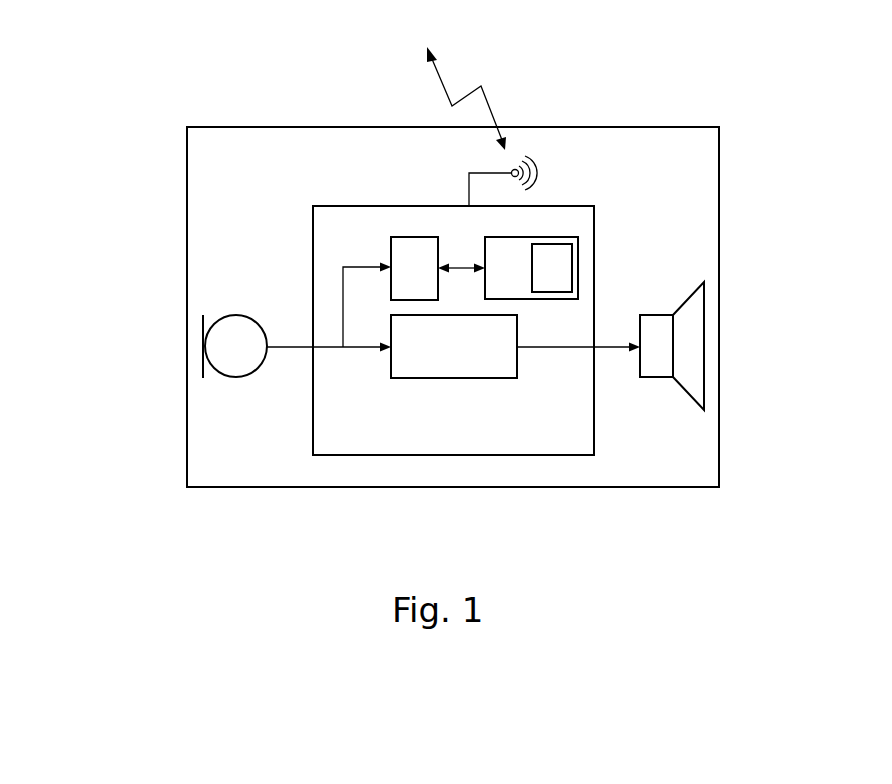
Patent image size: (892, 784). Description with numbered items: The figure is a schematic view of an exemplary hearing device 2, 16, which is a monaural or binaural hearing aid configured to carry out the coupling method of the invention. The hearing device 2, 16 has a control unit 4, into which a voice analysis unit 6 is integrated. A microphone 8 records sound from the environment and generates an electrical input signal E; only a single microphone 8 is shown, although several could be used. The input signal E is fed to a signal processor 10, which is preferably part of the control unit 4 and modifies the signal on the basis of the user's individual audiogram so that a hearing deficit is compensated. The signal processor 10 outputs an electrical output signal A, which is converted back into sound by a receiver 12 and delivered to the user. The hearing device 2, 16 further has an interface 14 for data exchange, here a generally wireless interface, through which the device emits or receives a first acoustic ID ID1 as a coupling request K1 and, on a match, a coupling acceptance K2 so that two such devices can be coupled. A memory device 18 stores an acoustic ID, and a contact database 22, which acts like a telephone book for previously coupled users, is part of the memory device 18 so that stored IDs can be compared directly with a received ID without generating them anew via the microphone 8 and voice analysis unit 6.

The hearing device 2 is at (404, 305).
The hearing device 16 is at (187, 200).
The control unit 4 is at (365, 455).
The voice analysis unit 6 is at (418, 237).
The microphone 8 is at (236, 314).
The signal processor 10 is at (420, 378).
The receiver 12 is at (704, 328).
The interface 14 is at (513, 167).
The memory device 18 is at (553, 217).
The contact database 22 is at (572, 268).
The input signal E is at (280, 343).
The output signal A is at (632, 347).
The coupling request K1 is at (433, 75).
The coupling acceptance K2 is at (466, 98).
The first acoustic ID ID1 is at (440, 78).